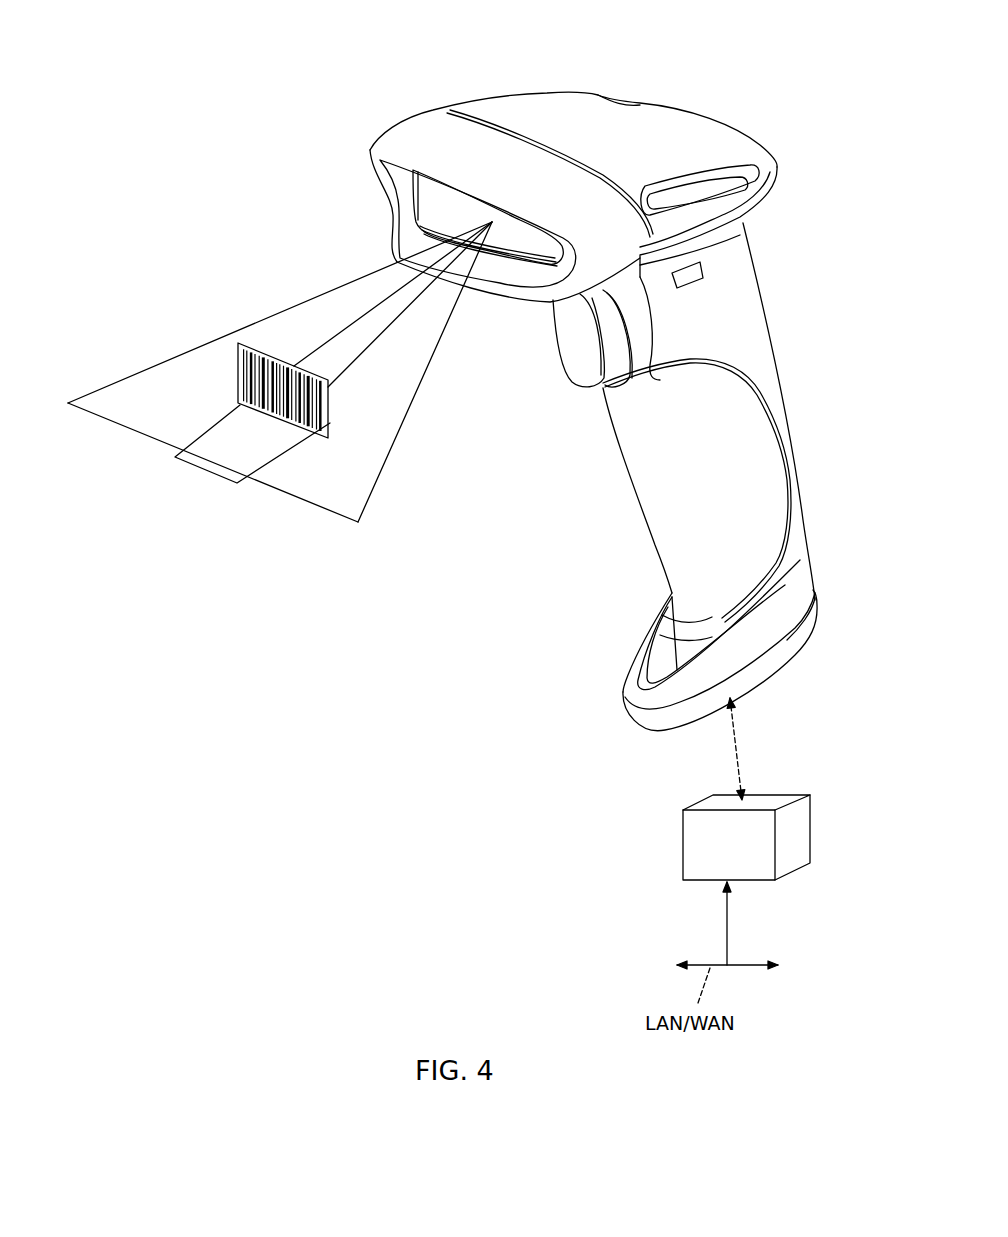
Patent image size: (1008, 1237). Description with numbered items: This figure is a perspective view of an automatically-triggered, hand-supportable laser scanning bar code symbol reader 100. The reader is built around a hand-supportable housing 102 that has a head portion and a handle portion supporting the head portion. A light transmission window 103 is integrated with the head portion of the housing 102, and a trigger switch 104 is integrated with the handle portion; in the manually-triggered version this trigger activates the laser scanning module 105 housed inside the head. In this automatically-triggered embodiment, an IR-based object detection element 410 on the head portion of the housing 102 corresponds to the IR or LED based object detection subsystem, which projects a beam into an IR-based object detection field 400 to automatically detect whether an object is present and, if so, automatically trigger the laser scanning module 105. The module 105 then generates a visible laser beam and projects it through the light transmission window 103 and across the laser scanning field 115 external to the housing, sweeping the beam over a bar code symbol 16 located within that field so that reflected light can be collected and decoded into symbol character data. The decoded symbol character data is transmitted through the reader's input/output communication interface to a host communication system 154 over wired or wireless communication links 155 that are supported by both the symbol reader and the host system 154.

The laser scanning bar code symbol reader 100 is at (773, 110).
The hand-supportable housing 102 is at (777, 452).
The light transmission window 103 is at (428, 208).
The manually-actuated trigger switch 104 is at (573, 348).
The laser scanning module 105 is at (598, 147).
The IR-based object detection sensor 410 is at (703, 262).
The bar code symbol 16 is at (330, 416).
The laser scanning field 115 is at (293, 497).
The IR-based object detection field 400 is at (355, 360).
The host communication system 154 is at (681, 844).
The communication links 155 is at (738, 748).